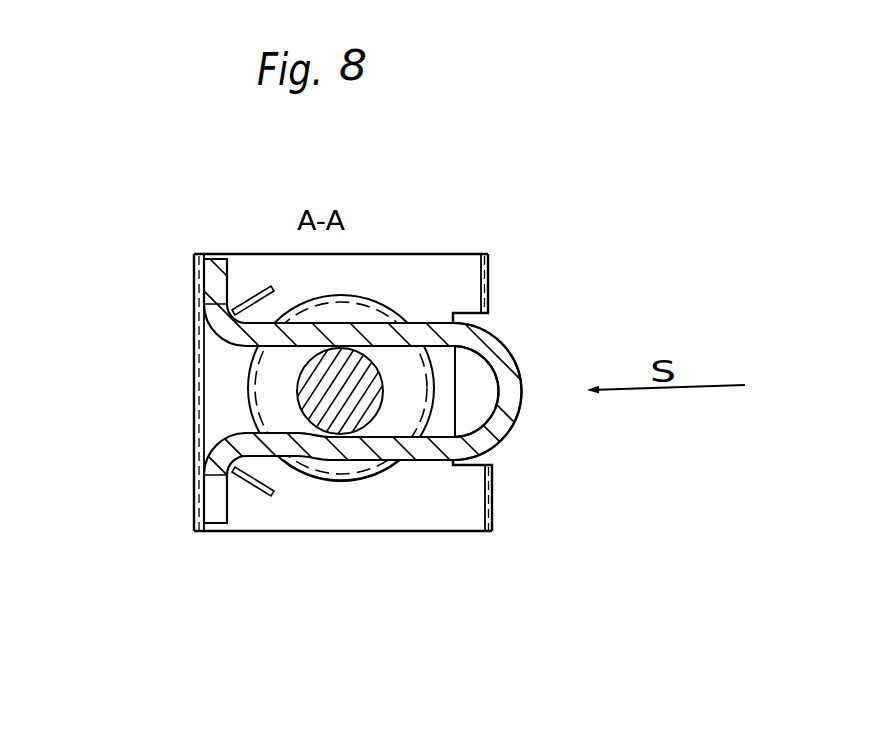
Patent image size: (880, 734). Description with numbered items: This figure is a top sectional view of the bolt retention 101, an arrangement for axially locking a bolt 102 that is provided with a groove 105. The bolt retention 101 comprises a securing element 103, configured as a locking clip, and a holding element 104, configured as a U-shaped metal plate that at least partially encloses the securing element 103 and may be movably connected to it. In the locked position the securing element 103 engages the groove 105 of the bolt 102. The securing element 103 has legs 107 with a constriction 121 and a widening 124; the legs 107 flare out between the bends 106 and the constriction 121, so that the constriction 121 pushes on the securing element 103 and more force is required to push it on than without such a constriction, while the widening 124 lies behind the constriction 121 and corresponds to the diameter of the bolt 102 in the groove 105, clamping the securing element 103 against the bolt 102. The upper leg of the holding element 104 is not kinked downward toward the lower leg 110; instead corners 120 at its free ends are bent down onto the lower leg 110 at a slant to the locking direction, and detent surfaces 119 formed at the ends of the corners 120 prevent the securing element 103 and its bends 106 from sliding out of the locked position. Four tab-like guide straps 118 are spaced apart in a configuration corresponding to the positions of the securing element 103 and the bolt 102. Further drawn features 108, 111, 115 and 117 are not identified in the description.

The bolt retention 101 is at (365, 393).
The bolt 102 is at (362, 362).
The securing element 103 is at (524, 329).
The holding element 104 is at (328, 545).
The groove 105 is at (371, 482).
The bends 106 is at (214, 266).
The legs 107 is at (442, 442).
The loop portion 108 is at (508, 402).
The lower leg 110 is at (465, 517).
The housing wall 111 is at (492, 255).
The base wall 115 is at (187, 333).
The bend 117 is at (507, 448).
The guide straps 118 is at (244, 422).
The detent surfaces 119 is at (219, 308).
The corners 120 is at (252, 296).
The constriction 121 is at (316, 466).
The widening 124 is at (369, 306).